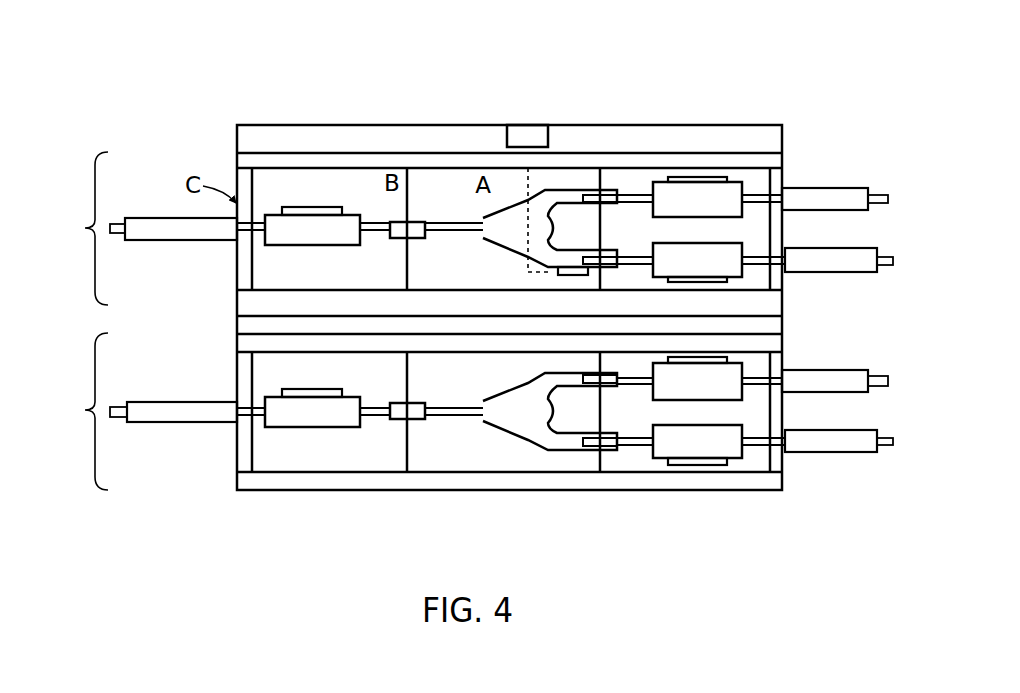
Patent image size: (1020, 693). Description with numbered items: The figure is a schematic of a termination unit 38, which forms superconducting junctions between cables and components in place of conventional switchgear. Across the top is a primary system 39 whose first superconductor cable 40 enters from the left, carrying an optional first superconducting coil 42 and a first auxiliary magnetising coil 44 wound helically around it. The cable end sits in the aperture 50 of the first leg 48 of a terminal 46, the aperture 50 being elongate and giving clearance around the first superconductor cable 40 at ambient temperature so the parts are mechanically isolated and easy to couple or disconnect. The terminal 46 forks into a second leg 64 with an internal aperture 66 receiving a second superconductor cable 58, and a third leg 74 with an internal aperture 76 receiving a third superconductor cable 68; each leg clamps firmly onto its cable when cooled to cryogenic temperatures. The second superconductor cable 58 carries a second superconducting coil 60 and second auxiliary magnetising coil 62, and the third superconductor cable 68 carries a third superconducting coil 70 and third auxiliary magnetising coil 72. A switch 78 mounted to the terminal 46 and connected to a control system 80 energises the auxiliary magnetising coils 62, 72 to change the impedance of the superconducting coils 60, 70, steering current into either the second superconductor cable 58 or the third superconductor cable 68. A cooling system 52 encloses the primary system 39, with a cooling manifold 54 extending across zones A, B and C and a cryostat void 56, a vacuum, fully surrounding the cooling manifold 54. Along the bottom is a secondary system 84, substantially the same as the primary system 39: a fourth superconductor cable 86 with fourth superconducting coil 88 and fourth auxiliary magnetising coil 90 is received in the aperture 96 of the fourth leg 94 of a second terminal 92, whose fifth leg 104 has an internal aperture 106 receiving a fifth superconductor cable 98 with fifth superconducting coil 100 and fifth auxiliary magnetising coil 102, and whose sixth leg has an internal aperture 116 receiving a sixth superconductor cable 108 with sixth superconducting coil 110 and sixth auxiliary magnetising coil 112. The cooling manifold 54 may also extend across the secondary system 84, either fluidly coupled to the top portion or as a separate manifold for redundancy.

The termination unit 38 is at (217, 87).
The primary system 39 is at (75, 228).
The first superconductor cable 40 is at (370, 222).
The first superconducting coil 42 is at (313, 228).
The first auxiliary magnetising coil 44 is at (313, 205).
The terminal 46 is at (510, 230).
The first leg 48 is at (449, 230).
The aperture 50 is at (386, 240).
The cooling system 52 is at (750, 115).
The cooling manifold 54 is at (385, 160).
The cryostat void 56 is at (340, 135).
The second superconductor cable 58 is at (763, 200).
The second superconducting coil 60 is at (697, 195).
The second auxiliary magnetising coil 62 is at (727, 165).
The second leg 64 is at (563, 198).
The internal aperture 66 is at (632, 183).
The third superconductor cable 68 is at (767, 250).
The third superconducting coil 70 is at (697, 257).
The third auxiliary magnetising coil 72 is at (733, 282).
The third leg 74 is at (567, 244).
The internal aperture 76 is at (629, 270).
The switch 78 is at (567, 273).
The control system 80 is at (527, 132).
The secondary system 84 is at (76, 411).
The fourth superconductor cable 86 is at (247, 407).
The fourth superconducting coil 88 is at (313, 413).
The fourth auxiliary magnetising coil 90 is at (313, 390).
The second terminal 92 is at (508, 412).
The fourth leg 94 is at (450, 412).
The aperture 96 is at (386, 424).
The fifth superconductor cable 98 is at (763, 381).
The fifth superconducting coil 100 is at (695, 380).
The fifth auxiliary magnetising coil 102 is at (697, 358).
The fifth leg 104 is at (567, 380).
The internal aperture 106 is at (613, 435).
The sixth superconductor cable 108 is at (773, 455).
The sixth superconducting coil 110 is at (727, 443).
The sixth auxiliary magnetising coil 112 is at (697, 464).
The internal aperture 116 is at (629, 454).